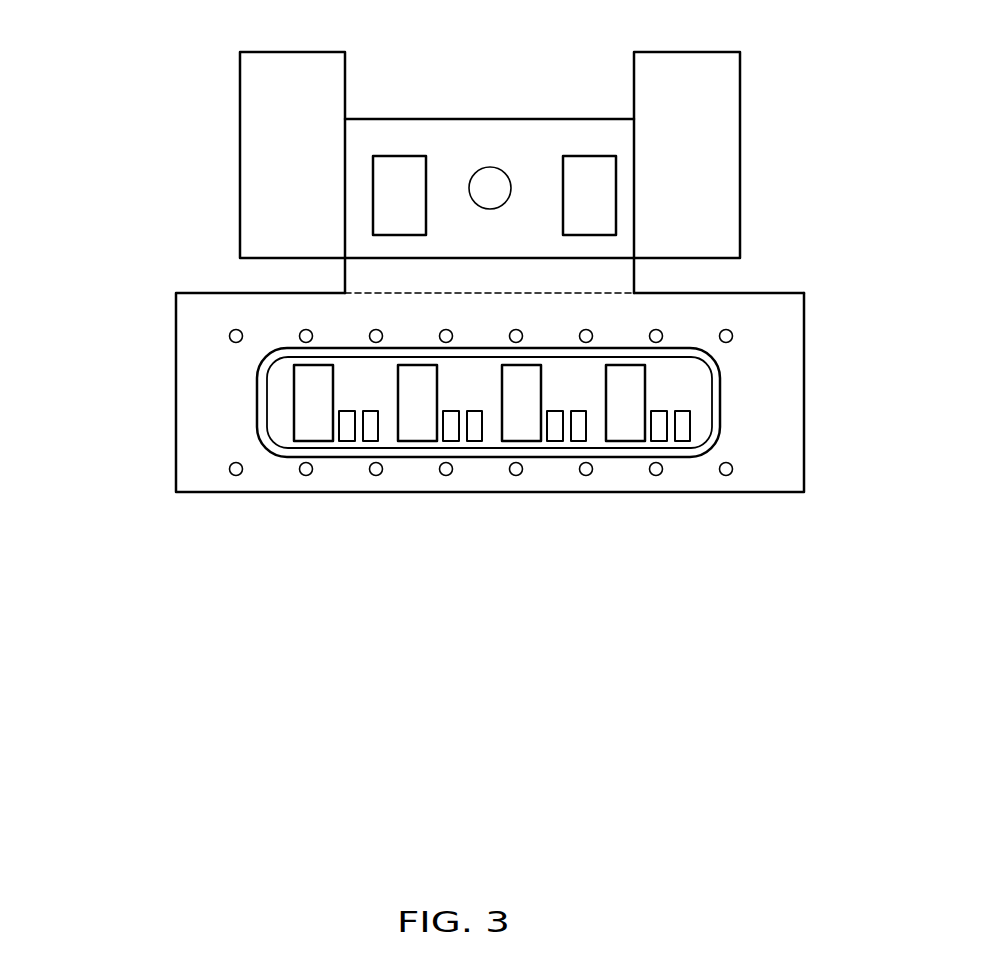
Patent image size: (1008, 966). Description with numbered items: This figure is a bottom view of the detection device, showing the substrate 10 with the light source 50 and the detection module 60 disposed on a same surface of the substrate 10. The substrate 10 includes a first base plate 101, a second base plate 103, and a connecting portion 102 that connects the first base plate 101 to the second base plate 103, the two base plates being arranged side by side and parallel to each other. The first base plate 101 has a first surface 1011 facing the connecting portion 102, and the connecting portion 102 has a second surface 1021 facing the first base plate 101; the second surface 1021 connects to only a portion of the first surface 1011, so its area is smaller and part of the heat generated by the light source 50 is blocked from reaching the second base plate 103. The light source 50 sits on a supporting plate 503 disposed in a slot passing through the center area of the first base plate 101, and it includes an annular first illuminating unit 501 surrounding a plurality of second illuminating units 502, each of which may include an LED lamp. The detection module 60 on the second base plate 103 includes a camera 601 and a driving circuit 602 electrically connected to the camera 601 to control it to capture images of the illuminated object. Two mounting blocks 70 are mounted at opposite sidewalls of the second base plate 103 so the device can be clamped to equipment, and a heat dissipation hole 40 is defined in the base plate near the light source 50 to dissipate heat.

The substrate 10 is at (460, 305).
The first base plate 101 is at (482, 363).
The first surface 1011 is at (736, 293).
The connecting portion 102 is at (476, 235).
The second surface 1021 is at (559, 293).
The second base plate 103 is at (362, 241).
The heat dissipation hole 40 is at (443, 473).
The light source 50 is at (403, 460).
The first illuminating unit 501 is at (262, 422).
The second illuminating units 502 is at (309, 388).
The supporting plate 503 is at (597, 437).
The detection module 60 is at (494, 128).
The camera 601 is at (588, 174).
The driving circuit 602 is at (392, 173).
The mounting blocks 70 is at (257, 101).